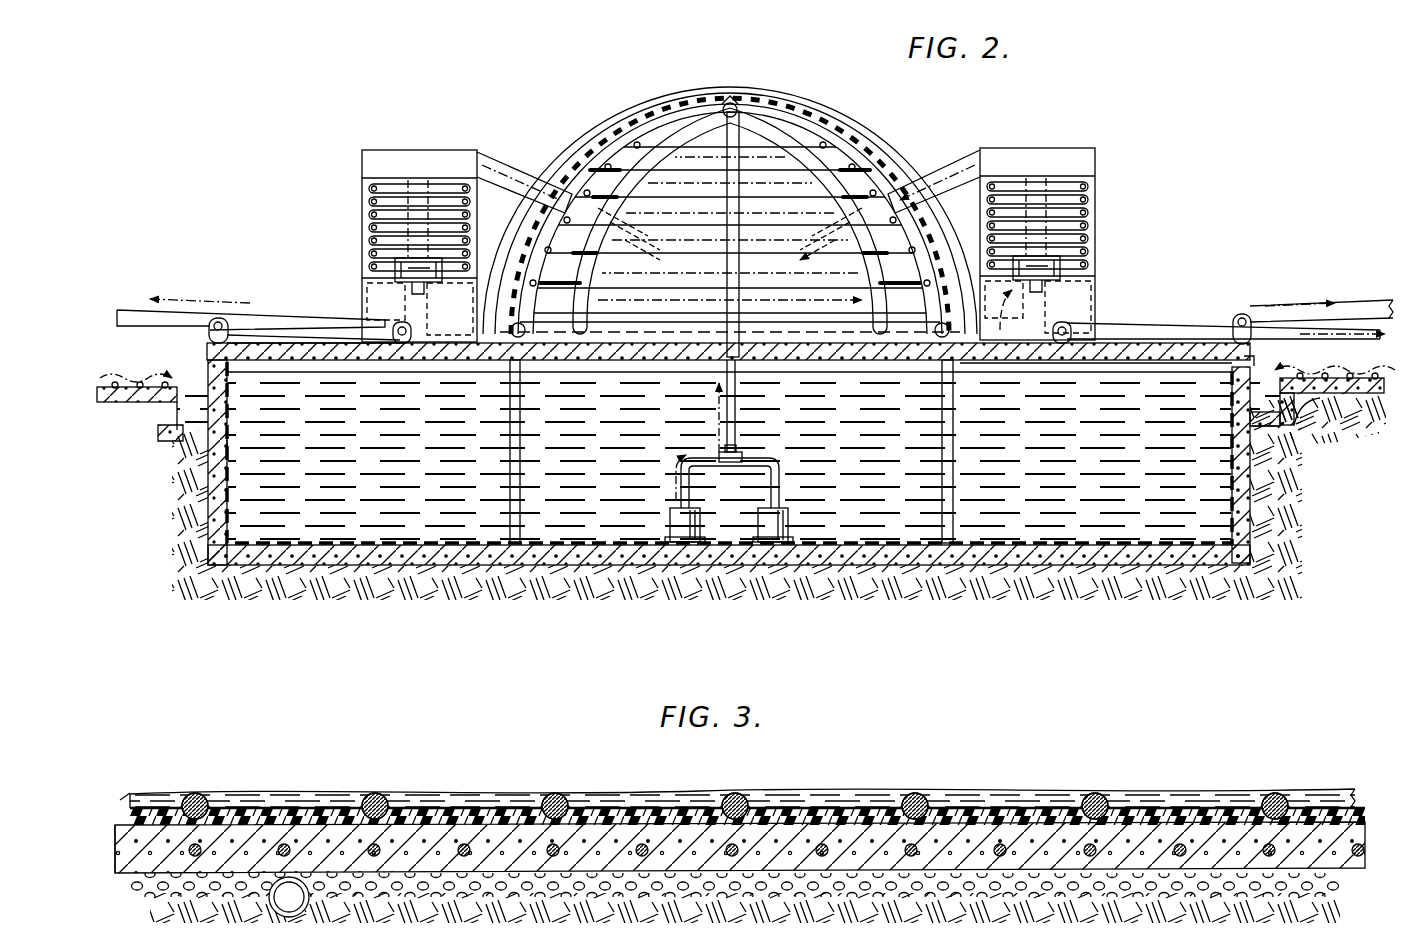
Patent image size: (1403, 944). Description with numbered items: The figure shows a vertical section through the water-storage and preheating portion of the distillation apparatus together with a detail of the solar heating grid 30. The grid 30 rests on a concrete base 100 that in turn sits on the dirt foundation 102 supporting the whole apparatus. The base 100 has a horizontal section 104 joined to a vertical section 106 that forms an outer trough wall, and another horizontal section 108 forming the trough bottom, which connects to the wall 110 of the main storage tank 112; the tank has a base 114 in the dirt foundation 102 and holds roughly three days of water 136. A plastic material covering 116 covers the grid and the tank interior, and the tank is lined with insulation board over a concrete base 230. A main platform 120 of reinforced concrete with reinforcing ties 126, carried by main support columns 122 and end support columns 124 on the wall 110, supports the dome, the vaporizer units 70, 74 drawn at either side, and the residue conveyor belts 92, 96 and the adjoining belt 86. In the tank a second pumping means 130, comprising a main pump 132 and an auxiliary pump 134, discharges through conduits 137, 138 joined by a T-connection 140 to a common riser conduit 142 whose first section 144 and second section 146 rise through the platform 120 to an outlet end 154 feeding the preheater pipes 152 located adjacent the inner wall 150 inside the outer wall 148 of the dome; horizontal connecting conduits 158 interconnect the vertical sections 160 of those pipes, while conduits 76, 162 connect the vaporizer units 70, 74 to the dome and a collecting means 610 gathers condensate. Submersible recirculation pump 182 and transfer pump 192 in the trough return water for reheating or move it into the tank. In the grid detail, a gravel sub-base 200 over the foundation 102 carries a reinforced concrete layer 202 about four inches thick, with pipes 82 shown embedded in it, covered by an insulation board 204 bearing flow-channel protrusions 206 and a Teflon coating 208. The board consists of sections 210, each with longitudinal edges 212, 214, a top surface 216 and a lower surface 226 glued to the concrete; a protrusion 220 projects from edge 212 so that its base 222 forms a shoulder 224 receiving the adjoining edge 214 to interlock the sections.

In FIG. 2, the solar heating grid 30 is at (1356, 370).
In FIG. 3, the solar heating grid 30 is at (1195, 770).
In FIG. 2, the heat exchanger unit 70 is at (1108, 160).
In FIG. 2, the heat exchanger unit 74 is at (455, 135).
In FIG. 2, the conduit 76 is at (498, 170).
In FIG. 3, the heating pipes 82 is at (776, 850).
In FIG. 2, the lower flap 86 is at (1295, 330).
In FIG. 2, the conveyor belt 92 is at (1345, 310).
In FIG. 2, the conveyor belt 96 is at (140, 318).
In FIG. 3, the concrete base 100 is at (603, 880).
In FIG. 2, the dirt foundation 102 is at (1362, 494).
In FIG. 3, the dirt foundation 102 is at (964, 914).
In FIG. 2, the horizontal section 104 is at (1377, 398).
In FIG. 2, the vertical section 106 is at (1297, 418).
In FIG. 2, the horizontal section 108 is at (1262, 440).
In FIG. 2, the wall 110 is at (1254, 522).
In FIG. 2, the main storage tank 112 is at (1147, 372).
In FIG. 2, the base 114 is at (855, 560).
In FIG. 2, the plastic material covering 116 is at (1128, 555).
In FIG. 2, the main platform 120 is at (262, 338).
In FIG. 2, the main support columns 122 is at (948, 522).
In FIG. 2, the end support columns 124 is at (1250, 362).
In FIG. 3, the reinforcing ties 126 is at (460, 840).
In FIG. 2, the second pumping means 130 is at (743, 451).
In FIG. 2, the main pump 132 is at (787, 523).
In FIG. 2, the auxiliary pump 134 is at (670, 523).
In FIG. 2, the water 136 is at (398, 469).
In FIG. 2, the conduit 137 is at (779, 482).
In FIG. 2, the conduit 138 is at (686, 492).
In FIG. 2, the T-connection 140 is at (741, 455).
In FIG. 2, the common riser conduit 142 is at (744, 348).
In FIG. 2, the first section 144 is at (736, 410).
In FIG. 2, the second section 146 is at (790, 160).
In FIG. 2, the outer wall 148 is at (609, 120).
In FIG. 2, the inner wall 150 is at (638, 125).
In FIG. 2, the preheater pipes 152 is at (622, 180).
In FIG. 2, the outlet end 154 is at (740, 104).
In FIG. 2, the horizontal connecting conduits 158 is at (790, 285).
In FIG. 2, the vertical sections 160 is at (543, 227).
In FIG. 2, the conduit 162 is at (962, 300).
In FIG. 2, the recirculation pump 182 is at (228, 452).
In FIG. 2, the transfer pump 192 is at (160, 438).
In FIG. 3, the gravel sub-base 200 is at (1328, 875).
In FIG. 3, the reinforced concrete layer 202 is at (1366, 835).
In FIG. 2, the insulation board 204 is at (1158, 542).
In FIG. 3, the insulation board 204 is at (1350, 817).
In FIG. 3, the protrusions 206 is at (1285, 776).
In FIG. 3, the coating 208 is at (1348, 783).
In FIG. 3, the section 210 is at (815, 790).
In FIG. 3, the longitudinal edge 212 is at (200, 803).
In FIG. 3, the longitudinal edge 214 is at (190, 818).
In FIG. 3, the top surface 216 is at (247, 805).
In FIG. 3, the protrusion 220 is at (190, 800).
In FIG. 3, the base 222 is at (145, 812).
In FIG. 3, the shoulder 224 is at (133, 823).
In FIG. 3, the lower surface 226 is at (288, 824).
In FIG. 2, the concrete base 230 is at (1043, 558).
In FIG. 2, the collecting means 610 is at (615, 328).